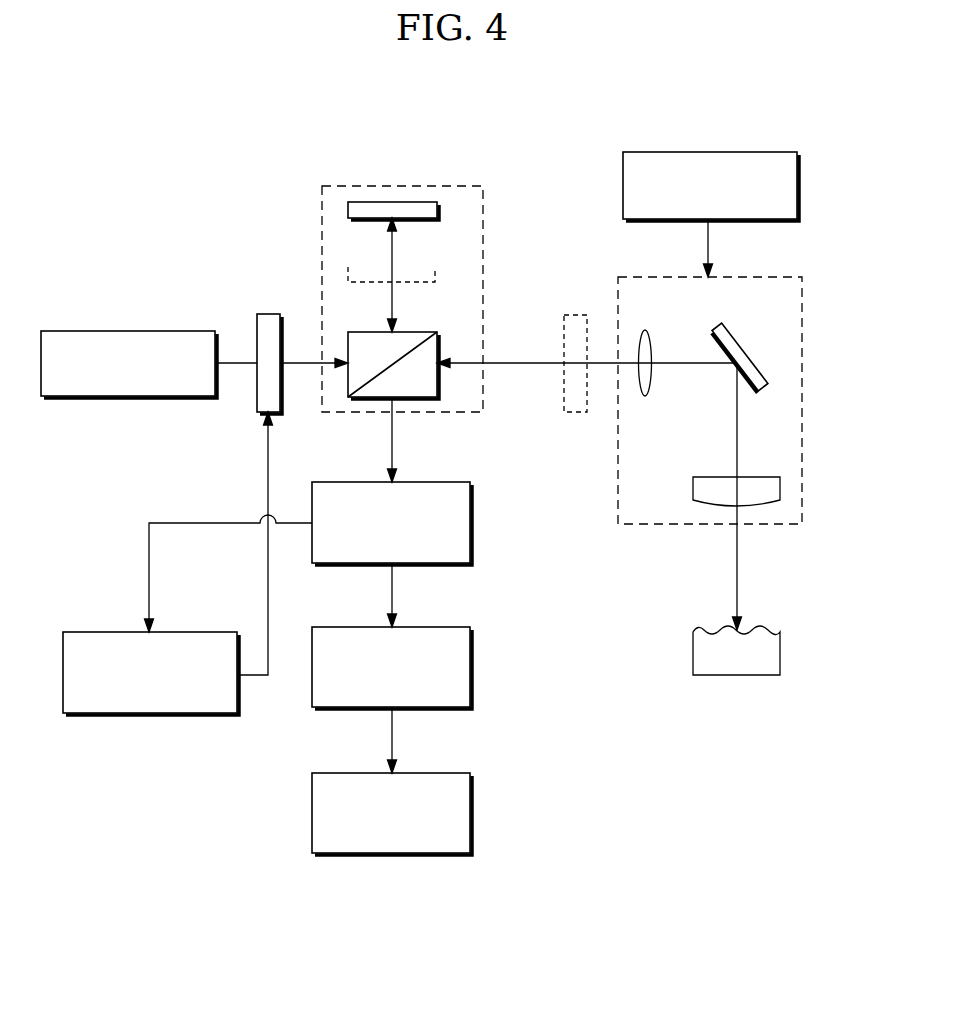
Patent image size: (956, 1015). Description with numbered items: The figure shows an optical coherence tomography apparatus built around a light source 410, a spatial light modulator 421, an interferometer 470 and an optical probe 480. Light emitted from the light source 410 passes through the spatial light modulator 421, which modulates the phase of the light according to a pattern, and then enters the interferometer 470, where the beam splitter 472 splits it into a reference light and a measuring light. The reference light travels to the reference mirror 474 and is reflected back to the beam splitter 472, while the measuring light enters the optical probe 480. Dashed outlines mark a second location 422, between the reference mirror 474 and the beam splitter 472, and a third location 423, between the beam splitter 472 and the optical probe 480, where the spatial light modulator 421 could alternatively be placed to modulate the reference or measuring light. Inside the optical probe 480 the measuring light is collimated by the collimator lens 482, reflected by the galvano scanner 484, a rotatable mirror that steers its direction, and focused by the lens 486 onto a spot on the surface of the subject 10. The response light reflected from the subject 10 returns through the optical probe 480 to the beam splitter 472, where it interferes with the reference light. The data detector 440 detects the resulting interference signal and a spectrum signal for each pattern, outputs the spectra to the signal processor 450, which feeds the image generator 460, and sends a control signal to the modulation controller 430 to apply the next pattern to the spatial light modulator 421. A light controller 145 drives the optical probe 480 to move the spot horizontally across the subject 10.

The subject 10 is at (770, 628).
The light controller 145 is at (738, 152).
The light source 410 is at (157, 331).
The spatial light modulator 421 is at (254, 404).
The second location 422 is at (348, 276).
The third location 423 is at (575, 412).
The modulation controller 430 is at (182, 632).
The data detector 440 is at (417, 481).
The signal processor 450 is at (417, 626).
The image generator 460 is at (417, 772).
The interferometer 470 is at (437, 185).
The beam splitter 472 is at (410, 332).
The reference mirror 474 is at (414, 220).
The optical probe 480 is at (722, 277).
The collimator lens 482 is at (645, 328).
The galvano scanner 484 is at (738, 340).
The lens 486 is at (693, 487).